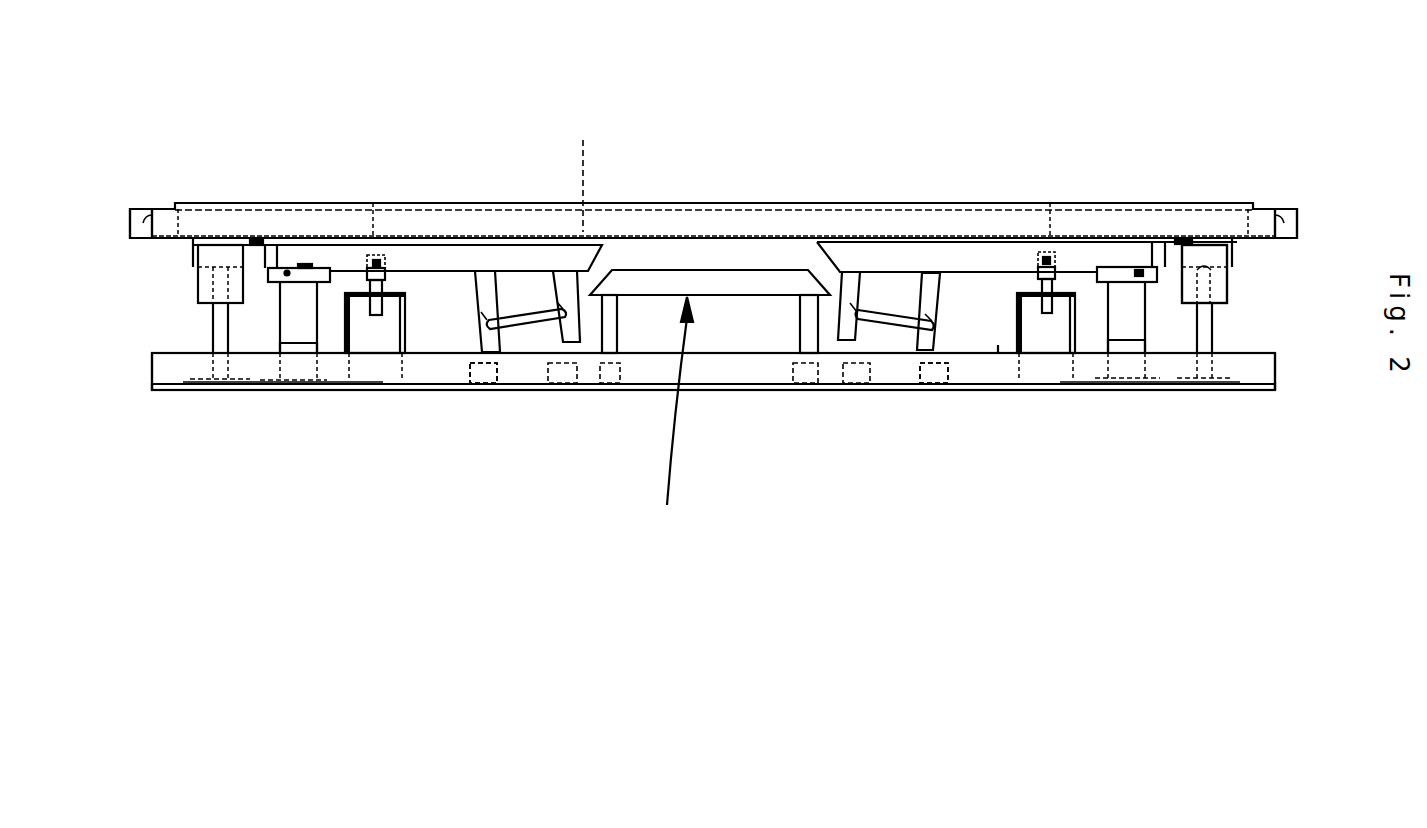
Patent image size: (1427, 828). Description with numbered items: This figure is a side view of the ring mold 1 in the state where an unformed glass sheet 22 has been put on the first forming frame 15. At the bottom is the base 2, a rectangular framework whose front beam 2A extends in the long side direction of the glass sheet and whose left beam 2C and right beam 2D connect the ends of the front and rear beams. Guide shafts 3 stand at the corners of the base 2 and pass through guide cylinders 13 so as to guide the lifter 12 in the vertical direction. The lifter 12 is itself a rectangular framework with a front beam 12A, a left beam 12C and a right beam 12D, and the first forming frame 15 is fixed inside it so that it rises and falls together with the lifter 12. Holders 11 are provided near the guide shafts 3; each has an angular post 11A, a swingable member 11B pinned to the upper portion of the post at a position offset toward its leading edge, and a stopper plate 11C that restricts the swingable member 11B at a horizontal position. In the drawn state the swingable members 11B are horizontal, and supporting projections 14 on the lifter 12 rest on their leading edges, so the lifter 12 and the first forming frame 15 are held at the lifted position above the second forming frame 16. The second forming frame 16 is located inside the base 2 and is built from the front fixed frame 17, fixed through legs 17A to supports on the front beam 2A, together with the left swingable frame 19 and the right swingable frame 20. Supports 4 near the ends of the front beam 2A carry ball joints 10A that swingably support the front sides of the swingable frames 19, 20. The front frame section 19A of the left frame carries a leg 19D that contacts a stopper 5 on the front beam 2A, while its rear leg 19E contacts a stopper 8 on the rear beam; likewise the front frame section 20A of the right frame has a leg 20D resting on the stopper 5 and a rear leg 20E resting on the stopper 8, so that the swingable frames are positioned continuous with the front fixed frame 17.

The ring mold 1 is at (848, 168).
The base 2 is at (710, 392).
The front beam 2A is at (755, 378).
The left beam 2C is at (152, 372).
The right beam 2D is at (1277, 367).
The guide shaft 3 is at (215, 327).
The support 4 is at (403, 340).
The stopper 5 is at (852, 385).
The stopper 8 is at (933, 385).
The ball joint 10A is at (373, 255).
The holder 11 is at (280, 318).
The angular post 11A is at (1113, 327).
The swingable member 11B is at (1157, 273).
The stopper plate 11C is at (1117, 263).
The lifter 12 is at (742, 222).
The front beam 12A is at (677, 220).
The left beam 12C is at (145, 207).
The right beam 12D is at (1282, 208).
The guide cylinder 13 is at (198, 263).
The supporting projection 14 is at (260, 238).
The first forming frame 15 is at (587, 169).
The second forming frame 16 is at (673, 421).
The front fixed frame 17 is at (775, 270).
The leg 17A is at (612, 337).
The left swingable frame 19 is at (437, 262).
The front frame section 19A is at (510, 268).
The leg 19D is at (565, 388).
The leg 19E is at (480, 387).
The right swingable frame 20 is at (1000, 262).
The front frame section 20A is at (935, 268).
The leg 20D is at (854, 297).
The leg 20E is at (934, 303).
The unformed glass sheet 22 is at (628, 210).